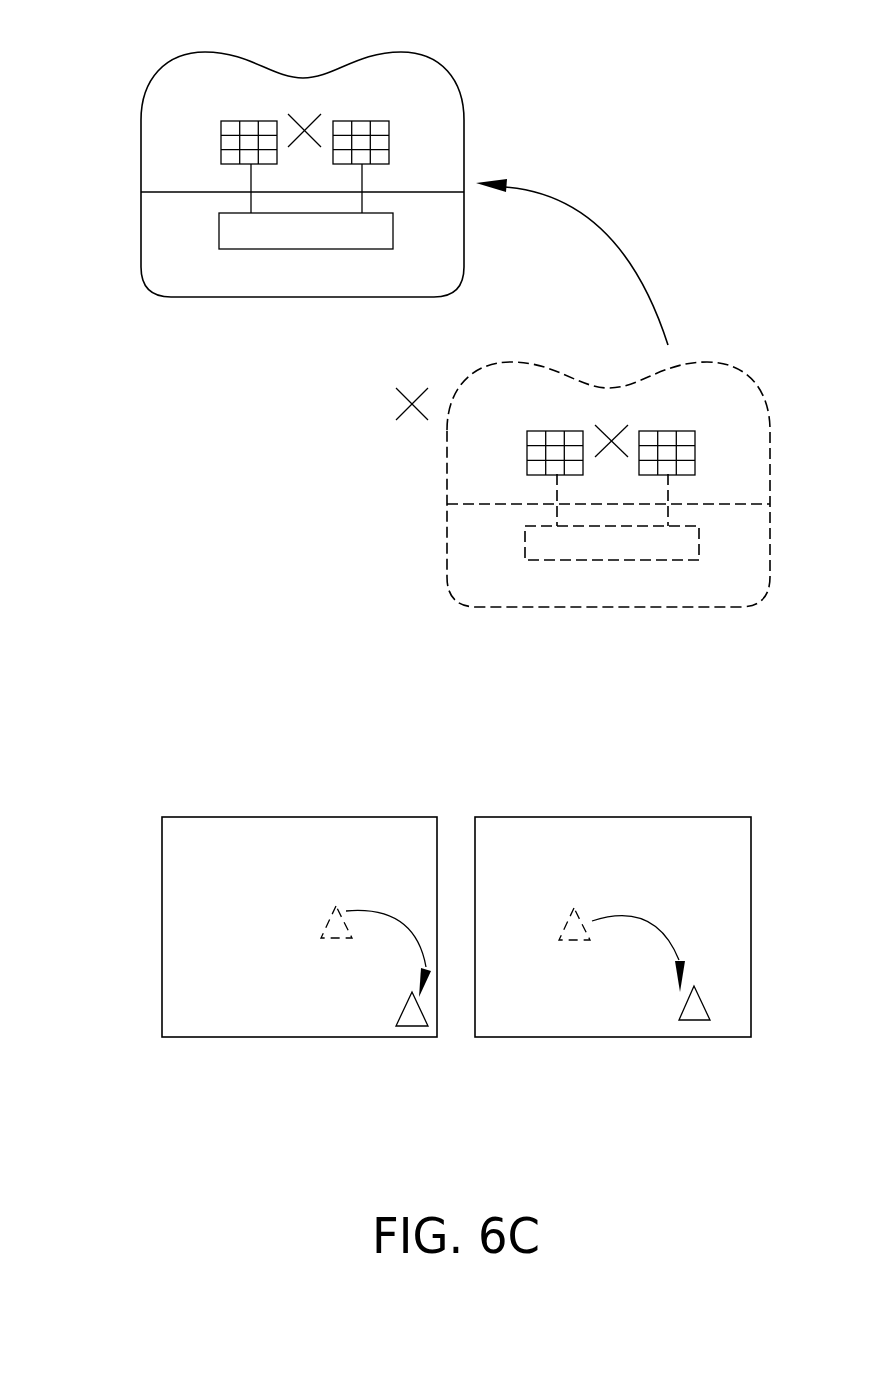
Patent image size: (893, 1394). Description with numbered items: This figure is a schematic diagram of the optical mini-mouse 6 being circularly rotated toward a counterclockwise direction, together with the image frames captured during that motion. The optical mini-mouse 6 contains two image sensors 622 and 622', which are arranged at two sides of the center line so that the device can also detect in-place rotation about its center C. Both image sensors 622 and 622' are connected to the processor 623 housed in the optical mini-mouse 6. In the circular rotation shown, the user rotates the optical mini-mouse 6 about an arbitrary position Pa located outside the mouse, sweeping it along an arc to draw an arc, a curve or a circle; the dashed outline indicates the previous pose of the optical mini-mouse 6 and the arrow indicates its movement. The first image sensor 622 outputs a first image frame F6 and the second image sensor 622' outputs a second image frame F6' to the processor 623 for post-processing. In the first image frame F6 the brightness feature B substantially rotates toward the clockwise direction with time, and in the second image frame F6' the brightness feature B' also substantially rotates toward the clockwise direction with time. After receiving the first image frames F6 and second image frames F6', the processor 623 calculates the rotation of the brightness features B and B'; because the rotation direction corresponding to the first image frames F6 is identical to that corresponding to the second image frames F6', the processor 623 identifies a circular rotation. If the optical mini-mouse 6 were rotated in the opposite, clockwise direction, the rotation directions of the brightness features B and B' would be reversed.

The optical mini-mouse 6 is at (148, 288).
The first image sensor 622 is at (159, 167).
The second image sensor 622' is at (450, 161).
The processor 623 is at (287, 249).
The center C is at (304, 113).
The arbitrary position Pa is at (412, 404).
The first image frame F6 is at (299, 867).
The second image frame F6' is at (613, 867).
The brightness feature B is at (412, 1066).
The brightness feature B' is at (702, 1059).